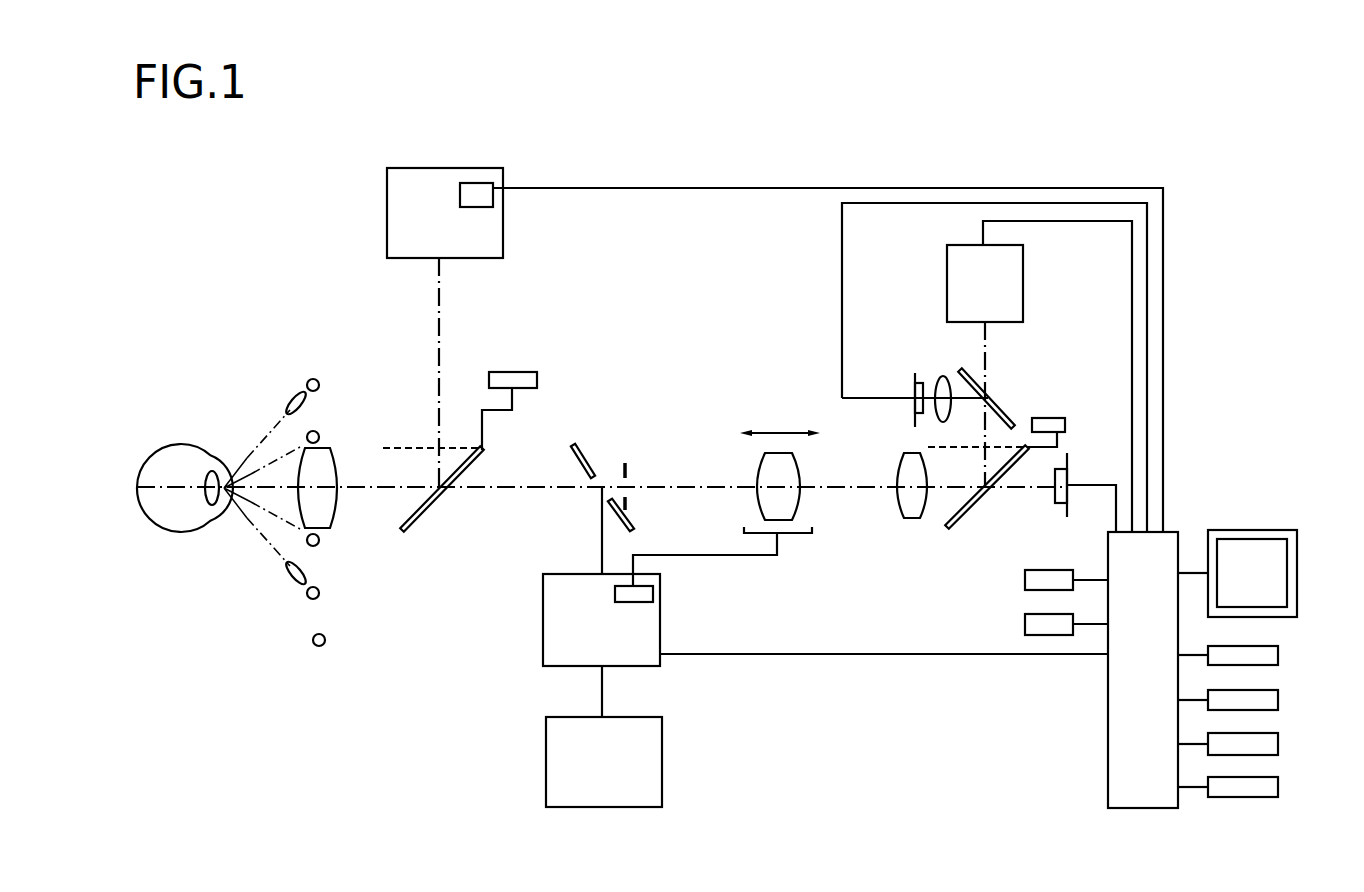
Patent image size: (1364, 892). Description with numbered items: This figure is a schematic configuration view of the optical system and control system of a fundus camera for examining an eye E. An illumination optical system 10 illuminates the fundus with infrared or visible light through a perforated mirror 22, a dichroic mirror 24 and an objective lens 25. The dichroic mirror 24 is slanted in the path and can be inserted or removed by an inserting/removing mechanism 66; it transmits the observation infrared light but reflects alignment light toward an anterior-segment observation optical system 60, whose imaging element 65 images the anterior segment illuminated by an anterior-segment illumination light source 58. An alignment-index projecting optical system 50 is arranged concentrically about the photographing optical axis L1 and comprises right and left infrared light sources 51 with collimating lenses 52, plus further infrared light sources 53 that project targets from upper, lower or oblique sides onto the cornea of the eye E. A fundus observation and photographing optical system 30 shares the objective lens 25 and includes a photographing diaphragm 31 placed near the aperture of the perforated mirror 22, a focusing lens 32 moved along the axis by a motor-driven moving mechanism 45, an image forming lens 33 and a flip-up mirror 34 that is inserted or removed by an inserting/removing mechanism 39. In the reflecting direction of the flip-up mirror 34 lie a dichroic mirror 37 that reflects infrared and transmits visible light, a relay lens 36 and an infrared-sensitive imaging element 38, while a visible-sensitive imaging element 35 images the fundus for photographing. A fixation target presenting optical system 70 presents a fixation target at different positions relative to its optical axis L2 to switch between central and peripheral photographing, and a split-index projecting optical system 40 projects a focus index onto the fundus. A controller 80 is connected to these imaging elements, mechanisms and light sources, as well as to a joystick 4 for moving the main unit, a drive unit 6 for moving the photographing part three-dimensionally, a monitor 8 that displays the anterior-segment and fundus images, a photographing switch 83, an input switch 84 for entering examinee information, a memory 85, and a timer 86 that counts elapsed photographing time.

The eye E is at (183, 533).
The alignment-index projecting optical system 50 is at (251, 416).
The infrared light sources 51 is at (311, 378).
The collimating lenses 52 is at (290, 394).
The infrared light sources 53 is at (319, 432).
The anterior-segment illumination light source 58 is at (316, 647).
The objective lens 25 is at (336, 466).
The photographing optical axis L1 is at (366, 493).
The dichroic mirror 24 is at (418, 520).
The anterior-segment observation optical system 60 is at (407, 193).
The imaging element 65 is at (486, 183).
The inserting/removing mechanism 66 is at (528, 372).
The perforated mirror 22 is at (589, 440).
The photographing diaphragm 31 is at (627, 462).
The fundus observation and photographing optical system 30 is at (706, 366).
The focusing lens 32 is at (764, 462).
The image forming lens 33 is at (900, 505).
The flip-up mirror 34 is at (978, 505).
The imaging element 35 is at (1070, 480).
The relay lens 36 is at (935, 418).
The dichroic mirror 37 is at (1000, 405).
The imaging element 38 is at (915, 378).
The inserting/removing mechanism 39 is at (1067, 425).
The fixation target presenting optical system 70 is at (950, 290).
The optical axis L2 is at (987, 366).
The split-index projecting optical system 40 is at (543, 605).
The moving mechanism 45 is at (655, 595).
The illumination optical system 10 is at (546, 748).
The controller 80 is at (1130, 780).
The monitor 8 is at (1266, 530).
The drive unit 6 is at (1025, 578).
The joystick 4 is at (1025, 622).
The photographing switch 83 is at (1280, 653).
The input switch 84 is at (1280, 698).
The memory 85 is at (1280, 742).
The timer 86 is at (1280, 785).